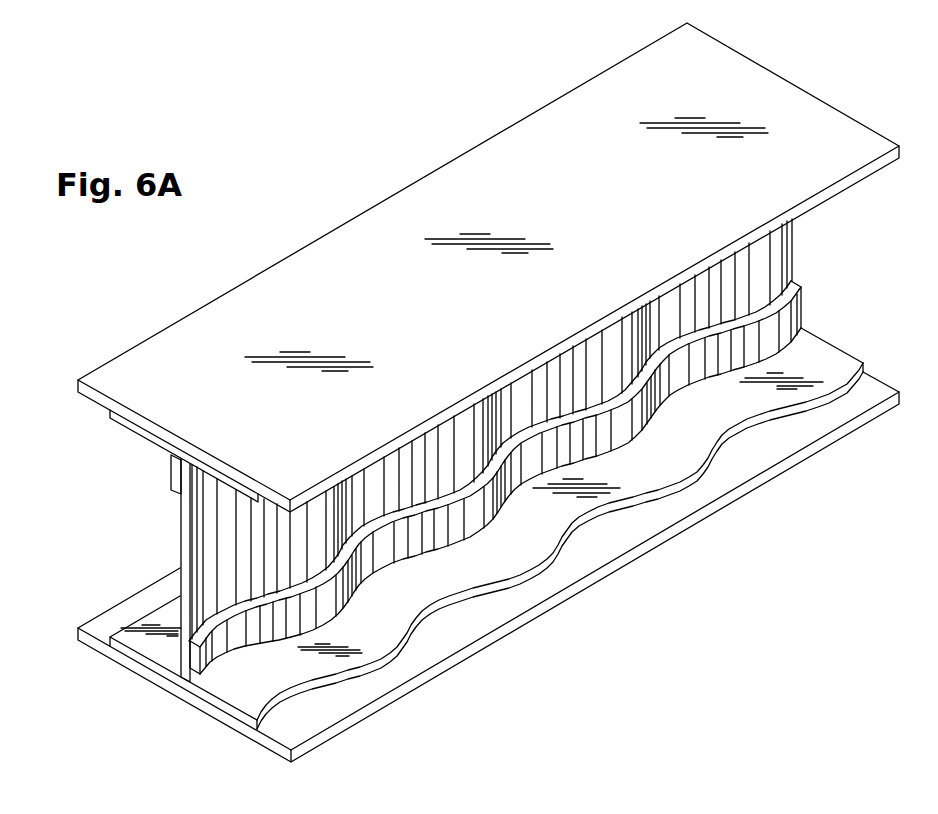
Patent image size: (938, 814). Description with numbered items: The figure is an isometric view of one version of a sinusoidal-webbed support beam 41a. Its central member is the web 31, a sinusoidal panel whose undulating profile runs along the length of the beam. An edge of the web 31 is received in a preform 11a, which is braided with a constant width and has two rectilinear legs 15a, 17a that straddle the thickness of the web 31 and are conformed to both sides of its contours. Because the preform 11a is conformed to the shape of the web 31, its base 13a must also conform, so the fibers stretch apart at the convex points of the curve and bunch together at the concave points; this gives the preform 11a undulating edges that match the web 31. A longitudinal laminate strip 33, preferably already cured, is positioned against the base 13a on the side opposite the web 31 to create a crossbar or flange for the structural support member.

The beam 41a is at (341, 194).
The laminate strip 33 is at (172, 365).
The preform 11a is at (156, 606).
The base 13a is at (398, 622).
The web 31 is at (260, 540).
The leg 17a is at (178, 650).
The leg 15a is at (190, 664).